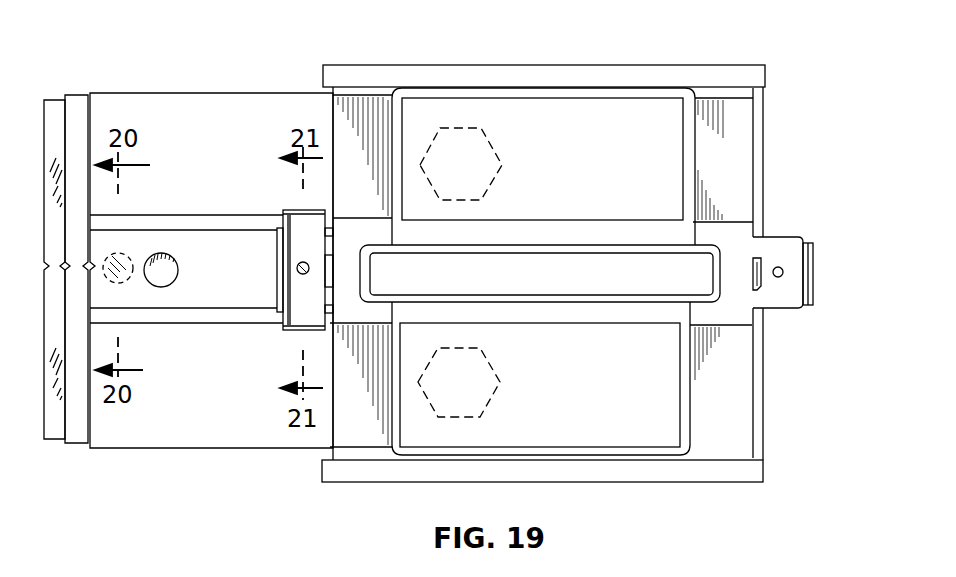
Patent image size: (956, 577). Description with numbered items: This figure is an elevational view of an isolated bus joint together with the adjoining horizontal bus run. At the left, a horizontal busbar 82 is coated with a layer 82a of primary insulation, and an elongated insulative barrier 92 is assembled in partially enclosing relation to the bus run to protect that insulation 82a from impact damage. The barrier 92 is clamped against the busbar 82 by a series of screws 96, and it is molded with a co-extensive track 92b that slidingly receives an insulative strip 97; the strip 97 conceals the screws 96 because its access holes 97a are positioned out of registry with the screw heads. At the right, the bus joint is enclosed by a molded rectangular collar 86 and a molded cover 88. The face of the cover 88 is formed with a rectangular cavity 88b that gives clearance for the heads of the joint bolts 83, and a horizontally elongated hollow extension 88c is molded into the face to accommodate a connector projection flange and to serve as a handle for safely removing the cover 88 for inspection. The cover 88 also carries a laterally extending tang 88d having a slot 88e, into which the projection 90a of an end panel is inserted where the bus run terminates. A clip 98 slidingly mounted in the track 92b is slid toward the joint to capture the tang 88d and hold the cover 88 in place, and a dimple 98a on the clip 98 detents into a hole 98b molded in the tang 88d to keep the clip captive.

The horizontal busbar 82 is at (55, 100).
The layer of primary insulation 82a is at (80, 100).
The insulative barrier 92 is at (204, 93).
The track 92b is at (203, 215).
The insulative strip 97 is at (232, 279).
The screw 96 is at (125, 253).
The access hole 97a is at (163, 283).
The clip 98 is at (293, 320).
The dimple 98a is at (310, 268).
The hole 98b is at (783, 272).
The joint bolt 83 is at (457, 128).
The collar 86 is at (723, 77).
The cover 88 is at (733, 430).
The rectangular cavity 88b is at (695, 115).
The hollow extension 88c is at (560, 245).
The tang 88d is at (790, 305).
The slot 88e is at (760, 258).
The projection 90a is at (762, 280).